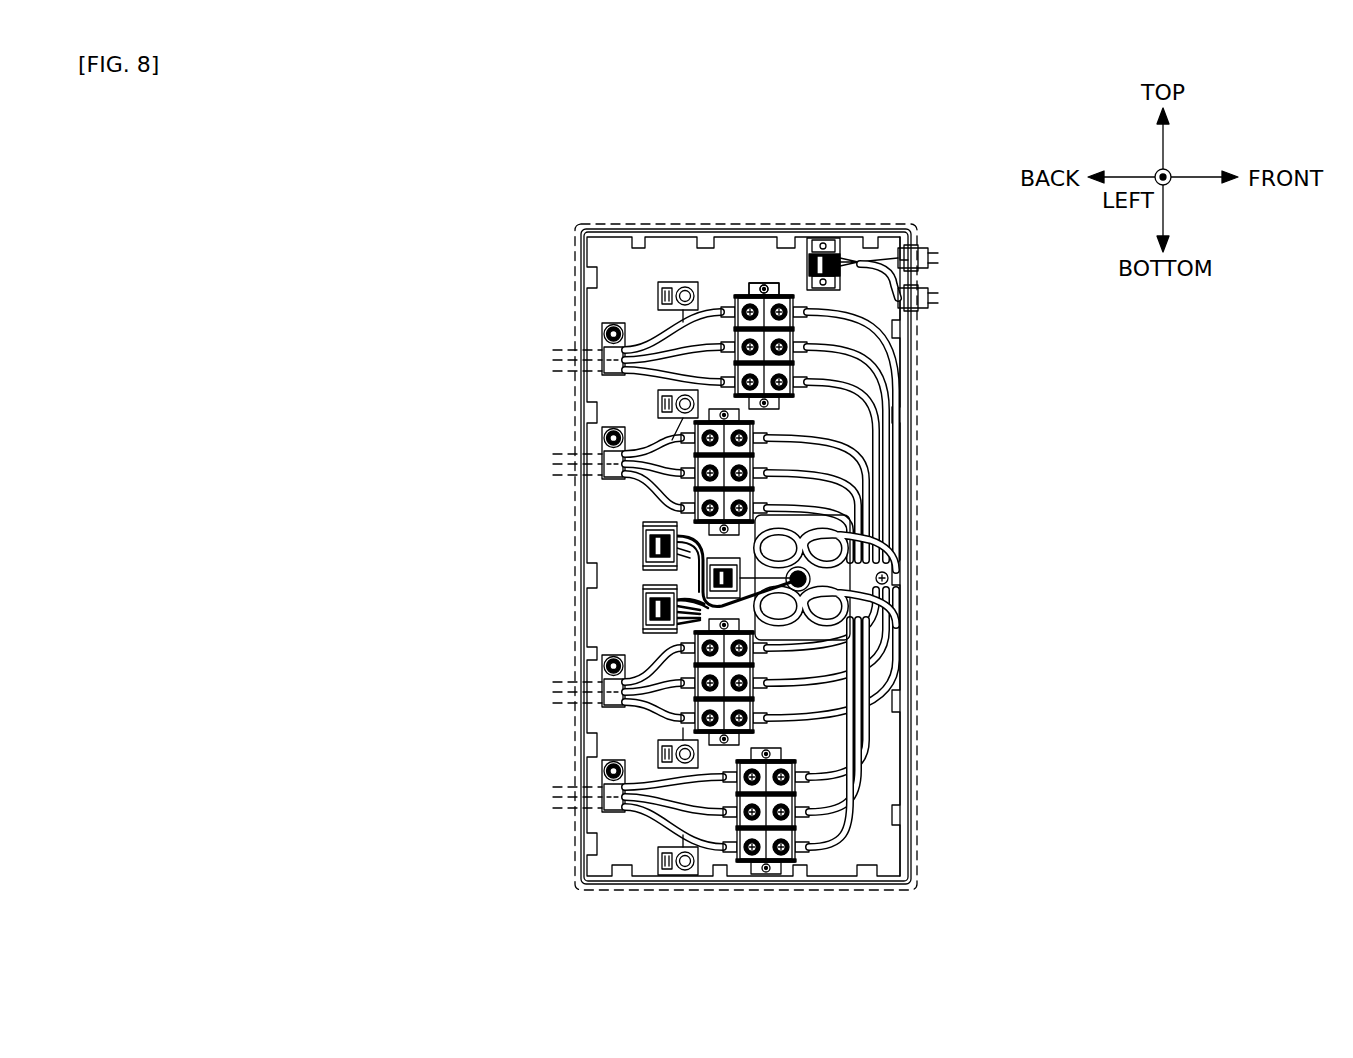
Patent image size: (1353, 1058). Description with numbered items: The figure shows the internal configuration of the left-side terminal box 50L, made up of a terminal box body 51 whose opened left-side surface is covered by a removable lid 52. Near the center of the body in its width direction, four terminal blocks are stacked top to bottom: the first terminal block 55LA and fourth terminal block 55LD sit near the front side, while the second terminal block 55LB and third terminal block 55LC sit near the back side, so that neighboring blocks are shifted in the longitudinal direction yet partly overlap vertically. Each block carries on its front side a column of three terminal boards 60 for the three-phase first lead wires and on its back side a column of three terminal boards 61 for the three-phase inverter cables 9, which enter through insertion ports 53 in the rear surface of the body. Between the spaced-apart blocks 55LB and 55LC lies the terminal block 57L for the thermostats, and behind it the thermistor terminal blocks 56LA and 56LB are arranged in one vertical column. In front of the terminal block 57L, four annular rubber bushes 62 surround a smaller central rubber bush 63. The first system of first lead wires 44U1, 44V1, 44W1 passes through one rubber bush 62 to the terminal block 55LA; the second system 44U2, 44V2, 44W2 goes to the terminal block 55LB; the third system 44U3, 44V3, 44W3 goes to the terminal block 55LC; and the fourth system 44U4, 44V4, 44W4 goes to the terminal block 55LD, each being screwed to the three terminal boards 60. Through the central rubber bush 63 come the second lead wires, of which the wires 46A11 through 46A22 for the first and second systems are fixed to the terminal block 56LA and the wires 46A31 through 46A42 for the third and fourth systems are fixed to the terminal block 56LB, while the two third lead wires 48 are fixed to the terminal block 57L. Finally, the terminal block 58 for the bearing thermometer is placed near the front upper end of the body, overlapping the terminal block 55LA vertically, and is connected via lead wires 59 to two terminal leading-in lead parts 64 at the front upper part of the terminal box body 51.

The terminal box 50L is at (782, 222).
The terminal box body 51 is at (661, 231).
The lid 52 is at (578, 282).
The insertion port 53 is at (582, 352).
The inverter cable 9 is at (598, 385).
The first terminal block 55LA is at (742, 292).
The second terminal block 55LB is at (757, 428).
The third terminal block 55LC is at (757, 738).
The fourth terminal block 55LD is at (745, 872).
The terminal block for thermistor 56LA is at (645, 528).
The terminal block for thermistor 56LB is at (645, 630).
The terminal block for thermostat 57L is at (707, 575).
The terminal block for bearing thermometer 58 is at (823, 240).
The lead wire 59 is at (884, 246).
The terminal board 60 is at (782, 287).
The terminal board 61 is at (740, 286).
The rubber bush 62 is at (850, 548).
The rubber bush 63 is at (890, 578).
The terminal leading-in lead part 64 is at (938, 268).
The third lead wire 48 is at (860, 630).
The second lead wire 46A11 is at (678, 558).
The second lead wire 46A22 is at (692, 609).
The second lead wire 46A31 is at (678, 625).
The second lead wire 46A42 is at (688, 622).
The first lead wire 44U1 is at (880, 333).
The first lead wire 44V1 is at (880, 362).
The first lead wire 44W1 is at (882, 392).
The first lead wire 44U2 is at (870, 445).
The first lead wire 44V2 is at (870, 478).
The first lead wire 44W2 is at (875, 512).
The first lead wire 44U3 is at (890, 612).
The first lead wire 44V3 is at (895, 668).
The first lead wire 44W3 is at (890, 695).
The first lead wire 44U4 is at (880, 770).
The first lead wire 44V4 is at (880, 805).
The first lead wire 44W4 is at (885, 833).